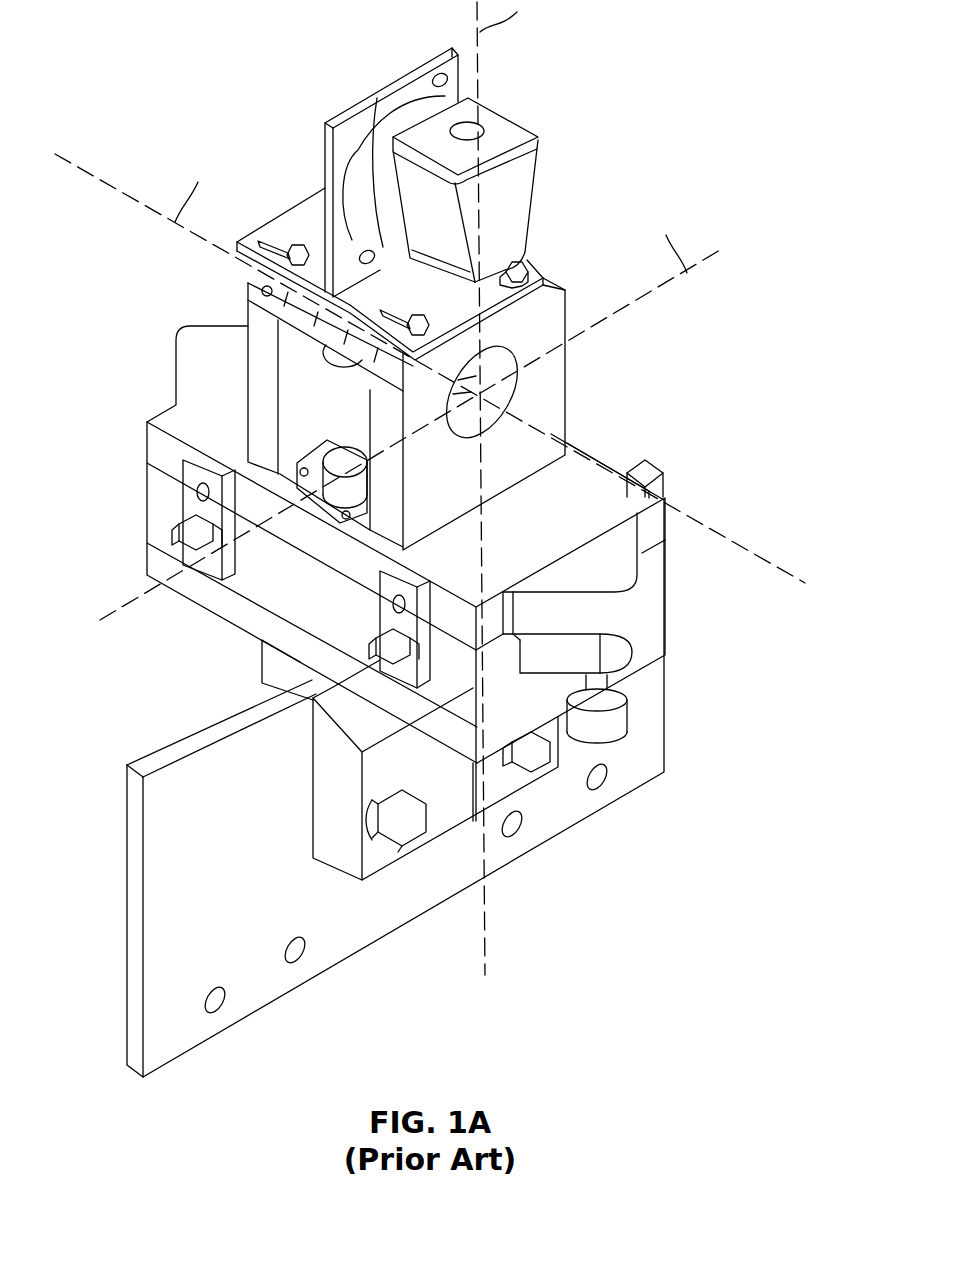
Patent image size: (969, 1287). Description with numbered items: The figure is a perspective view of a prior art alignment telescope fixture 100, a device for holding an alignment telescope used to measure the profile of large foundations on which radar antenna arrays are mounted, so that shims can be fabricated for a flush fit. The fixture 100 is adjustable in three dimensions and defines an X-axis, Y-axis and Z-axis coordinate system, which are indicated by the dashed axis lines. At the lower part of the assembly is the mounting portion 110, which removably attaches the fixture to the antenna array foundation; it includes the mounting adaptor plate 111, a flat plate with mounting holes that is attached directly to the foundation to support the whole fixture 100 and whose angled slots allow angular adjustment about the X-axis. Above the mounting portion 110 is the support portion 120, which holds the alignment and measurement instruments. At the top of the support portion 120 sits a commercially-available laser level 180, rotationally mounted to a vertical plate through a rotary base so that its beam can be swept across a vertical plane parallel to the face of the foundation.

The alignment telescope fixture 100 is at (226, 60).
The mounting portion 110 is at (600, 834).
The mounting adaptor plate 111 is at (352, 943).
The support portion 120 is at (147, 392).
The laser level 180 is at (533, 192).